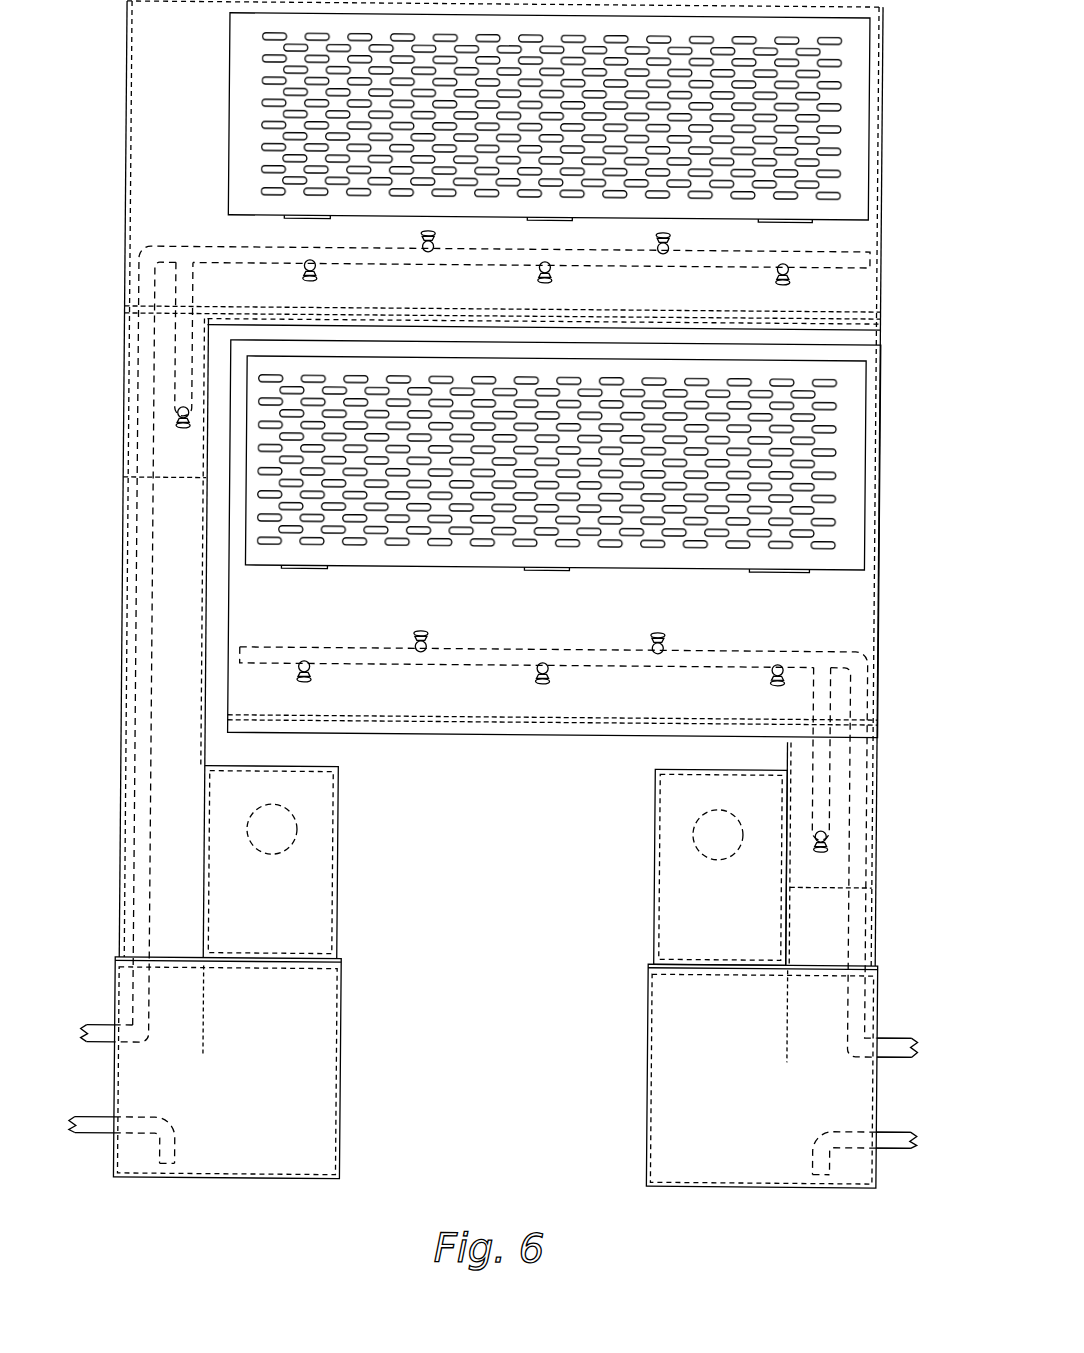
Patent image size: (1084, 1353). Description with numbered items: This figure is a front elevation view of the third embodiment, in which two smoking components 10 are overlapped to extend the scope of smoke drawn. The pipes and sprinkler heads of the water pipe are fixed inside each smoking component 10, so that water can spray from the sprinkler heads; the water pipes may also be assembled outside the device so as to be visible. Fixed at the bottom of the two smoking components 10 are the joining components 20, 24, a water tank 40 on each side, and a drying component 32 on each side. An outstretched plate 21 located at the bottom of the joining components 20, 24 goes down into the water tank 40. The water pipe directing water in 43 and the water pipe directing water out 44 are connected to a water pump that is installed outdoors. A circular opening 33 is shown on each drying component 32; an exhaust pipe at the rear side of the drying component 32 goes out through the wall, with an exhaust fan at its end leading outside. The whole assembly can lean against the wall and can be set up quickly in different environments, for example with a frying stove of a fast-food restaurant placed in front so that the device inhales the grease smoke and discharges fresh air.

The smoking component 10 is at (885, 137).
The joining component 20 is at (883, 832).
The outstretched plate 21 is at (211, 1035).
The joining component 24 is at (119, 675).
The drying component 32 is at (368, 881).
The opening 33 is at (275, 856).
The water tank 40 is at (360, 1049).
The water pipe directing water in 43 is at (893, 1045).
The water pipe directing water out 44 is at (895, 1137).